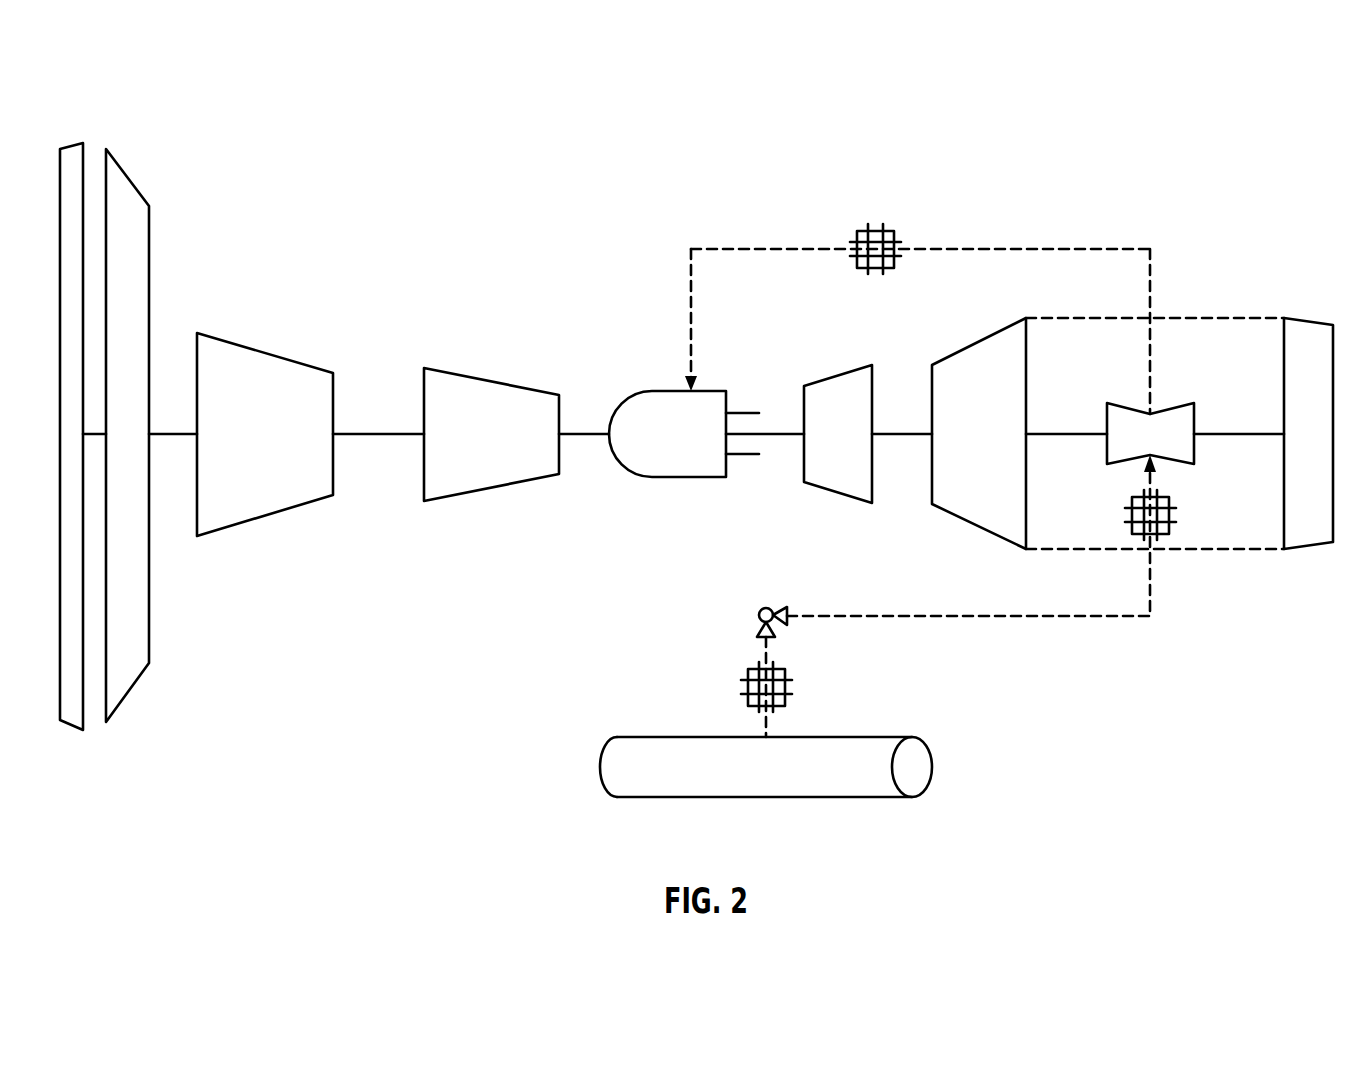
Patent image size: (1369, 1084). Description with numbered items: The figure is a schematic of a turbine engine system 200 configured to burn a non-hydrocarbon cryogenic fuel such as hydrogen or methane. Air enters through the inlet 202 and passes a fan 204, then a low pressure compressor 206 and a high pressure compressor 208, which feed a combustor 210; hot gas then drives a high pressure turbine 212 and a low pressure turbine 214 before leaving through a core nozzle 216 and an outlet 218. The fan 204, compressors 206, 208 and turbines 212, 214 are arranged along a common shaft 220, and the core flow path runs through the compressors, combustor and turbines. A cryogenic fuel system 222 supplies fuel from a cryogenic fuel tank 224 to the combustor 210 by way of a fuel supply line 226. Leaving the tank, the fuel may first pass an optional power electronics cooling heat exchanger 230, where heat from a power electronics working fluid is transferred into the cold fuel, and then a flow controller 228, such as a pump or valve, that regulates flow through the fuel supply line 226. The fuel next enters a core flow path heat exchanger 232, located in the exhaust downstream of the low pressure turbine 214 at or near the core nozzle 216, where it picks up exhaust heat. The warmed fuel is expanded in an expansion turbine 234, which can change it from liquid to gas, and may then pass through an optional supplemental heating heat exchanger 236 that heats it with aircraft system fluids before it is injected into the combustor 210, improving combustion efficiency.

The turbine engine system 200 is at (1225, 142).
The inlet 202 is at (73, 153).
The fan 204 is at (127, 188).
The low pressure compressor 206 is at (247, 360).
The high pressure compressor 208 is at (478, 398).
The combustor 210 is at (707, 397).
The high pressure turbine 212 is at (843, 383).
The low pressure turbine 214 is at (987, 343).
The core nozzle 216 is at (1247, 552).
The outlet 218 is at (1299, 335).
The shaft 220 is at (356, 430).
The cryogenic fuel system 222 is at (945, 665).
The cryogenic fuel tank 224 is at (847, 778).
The fuel supply line 226 is at (888, 615).
The flow controller 228 is at (759, 613).
The power electronics cooling heat exchanger 230 is at (778, 690).
The core flow path heat exchanger 232 is at (1165, 528).
The expansion turbine 234 is at (1167, 417).
The supplemental heating heat exchanger 236 is at (877, 232).